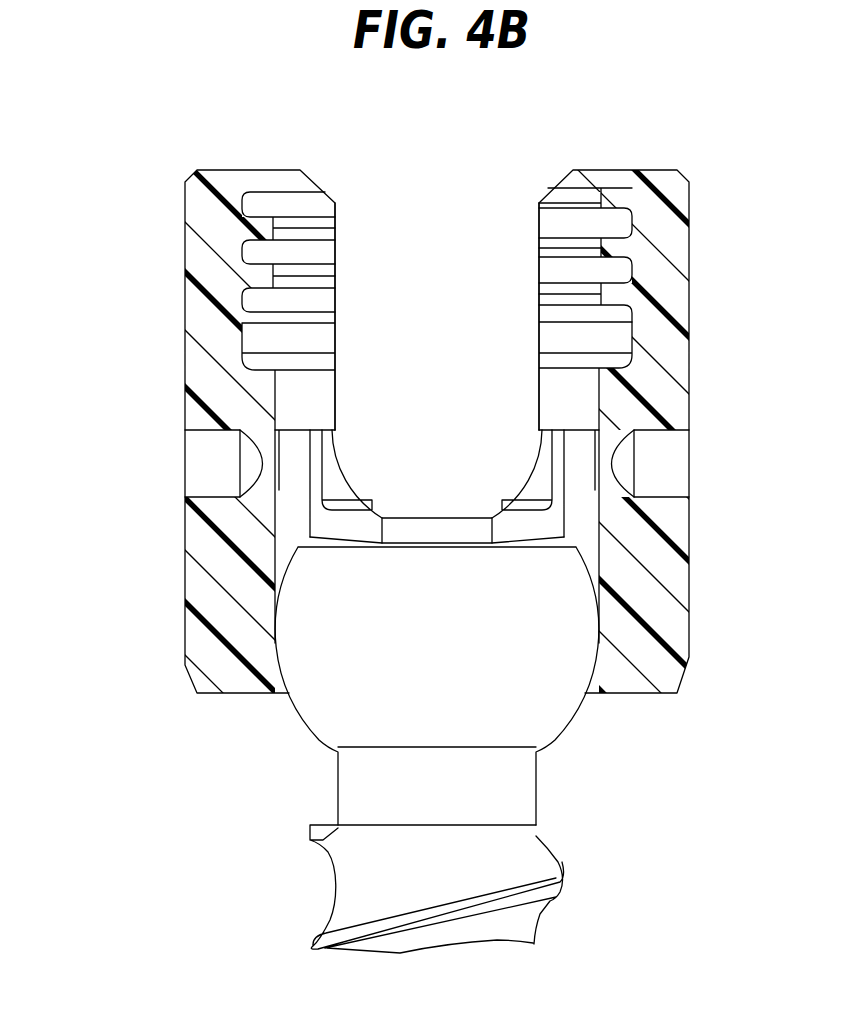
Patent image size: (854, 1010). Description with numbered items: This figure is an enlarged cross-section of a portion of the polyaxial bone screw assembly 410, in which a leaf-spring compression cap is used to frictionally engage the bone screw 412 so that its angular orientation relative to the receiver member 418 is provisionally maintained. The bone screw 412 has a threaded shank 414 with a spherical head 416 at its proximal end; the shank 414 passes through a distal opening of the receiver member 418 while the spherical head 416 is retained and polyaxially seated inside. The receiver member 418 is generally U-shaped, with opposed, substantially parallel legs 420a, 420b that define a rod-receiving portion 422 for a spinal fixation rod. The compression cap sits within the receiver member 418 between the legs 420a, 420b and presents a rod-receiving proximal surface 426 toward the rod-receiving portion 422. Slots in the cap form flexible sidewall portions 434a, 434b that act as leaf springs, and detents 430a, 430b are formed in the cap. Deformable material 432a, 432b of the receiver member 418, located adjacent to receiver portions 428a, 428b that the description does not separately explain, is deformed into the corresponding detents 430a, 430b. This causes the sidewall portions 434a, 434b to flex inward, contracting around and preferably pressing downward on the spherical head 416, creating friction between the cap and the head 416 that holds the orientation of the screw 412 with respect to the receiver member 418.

The polyaxial bone screw assembly 410 is at (182, 130).
The bone screw 412 is at (645, 783).
The threaded shank 414 is at (555, 855).
The spherical head 416 is at (465, 648).
The receiver member 418 is at (720, 302).
The first leg 420a is at (672, 245).
The second leg 420b is at (203, 247).
The rod-receiving portion 422 is at (502, 194).
The rod-receiving proximal surface 426 is at (355, 465).
The first recess 428a is at (701, 463).
The second recess 428b is at (174, 463).
The first detent 430a is at (604, 466).
The second detent 430b is at (270, 466).
The deformable material 432a is at (596, 452).
The deformable material 432b is at (278, 452).
The sidewall portion 434a is at (586, 527).
The sidewall portion 434b is at (288, 527).